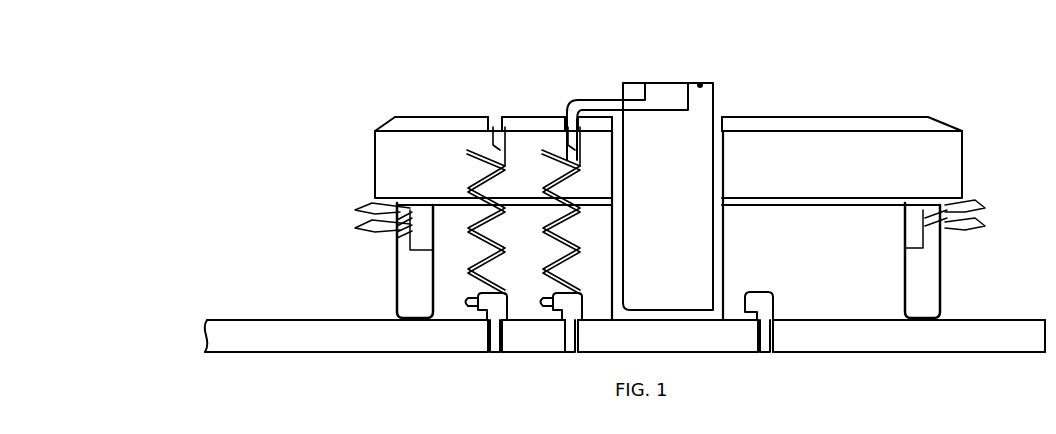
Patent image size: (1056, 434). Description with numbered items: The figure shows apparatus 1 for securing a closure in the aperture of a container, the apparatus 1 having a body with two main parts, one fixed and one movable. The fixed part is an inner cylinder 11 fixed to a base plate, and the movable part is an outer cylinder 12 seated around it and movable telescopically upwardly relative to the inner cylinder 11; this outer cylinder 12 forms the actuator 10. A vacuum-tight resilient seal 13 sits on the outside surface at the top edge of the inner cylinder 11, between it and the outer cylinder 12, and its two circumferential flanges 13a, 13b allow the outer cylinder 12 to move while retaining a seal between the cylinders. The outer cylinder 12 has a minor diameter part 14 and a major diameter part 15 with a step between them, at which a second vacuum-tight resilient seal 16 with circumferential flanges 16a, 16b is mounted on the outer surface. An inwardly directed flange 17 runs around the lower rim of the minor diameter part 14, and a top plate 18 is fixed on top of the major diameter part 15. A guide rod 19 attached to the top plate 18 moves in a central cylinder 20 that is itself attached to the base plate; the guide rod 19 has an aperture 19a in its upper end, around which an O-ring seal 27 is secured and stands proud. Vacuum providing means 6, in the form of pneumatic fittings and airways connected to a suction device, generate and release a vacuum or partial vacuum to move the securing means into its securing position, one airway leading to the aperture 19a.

The apparatus 1 is at (905, 86).
The vacuum providing means 6 is at (466, 314).
The actuator 10 is at (677, 136).
The inner cylinder 11 is at (947, 247).
The outer cylinder 12 is at (940, 288).
The vacuum-tight resilient seal 13 is at (374, 251).
The circumferential flange 13a is at (360, 208).
The circumferential flange 13b is at (372, 232).
The minor diameter part 14 is at (412, 290).
The major diameter part 15 is at (390, 158).
The second vacuum-tight resilient seal 16 is at (984, 222).
The circumferential flange 16a is at (985, 205).
The circumferential flange 16b is at (985, 226).
The inwardly directed flange 17 is at (928, 322).
The top plate 18 is at (848, 117).
The guide rod 19 is at (664, 173).
The aperture 19a is at (677, 83).
The central cylinder 20 is at (723, 258).
The O-ring seal 27 is at (630, 84).